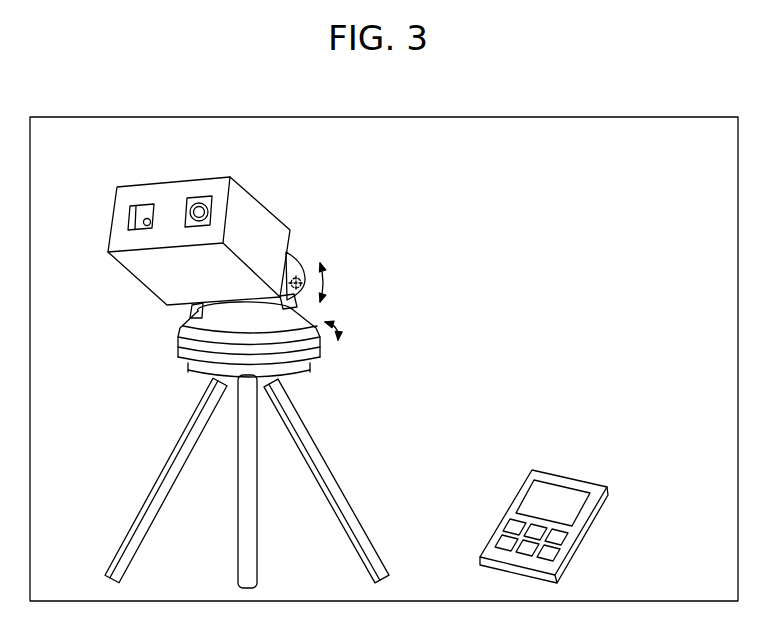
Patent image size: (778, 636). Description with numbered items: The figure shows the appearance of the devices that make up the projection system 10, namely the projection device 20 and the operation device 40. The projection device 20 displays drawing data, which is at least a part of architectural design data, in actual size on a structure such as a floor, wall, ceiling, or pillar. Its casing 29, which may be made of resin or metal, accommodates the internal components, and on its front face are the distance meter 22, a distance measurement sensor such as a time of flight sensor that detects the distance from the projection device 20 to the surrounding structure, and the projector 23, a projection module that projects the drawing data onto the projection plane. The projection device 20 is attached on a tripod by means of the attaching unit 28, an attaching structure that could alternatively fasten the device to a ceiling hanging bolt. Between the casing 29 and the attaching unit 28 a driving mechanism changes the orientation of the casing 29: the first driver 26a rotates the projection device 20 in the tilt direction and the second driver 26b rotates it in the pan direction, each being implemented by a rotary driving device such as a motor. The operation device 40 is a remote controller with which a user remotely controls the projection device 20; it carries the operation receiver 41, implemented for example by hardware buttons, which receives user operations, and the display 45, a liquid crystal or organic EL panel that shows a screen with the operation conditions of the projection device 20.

The projection system 10 is at (652, 117).
The projection device 20 is at (243, 245).
The distance meter 22 is at (201, 197).
The projector 23 is at (147, 208).
The first driver 26a is at (325, 283).
The second driver 26b is at (303, 317).
The attaching unit 28 is at (186, 344).
The casing 29 is at (143, 270).
The operation device 40 is at (571, 506).
The operation receiver 41 is at (557, 538).
The display 45 is at (565, 503).